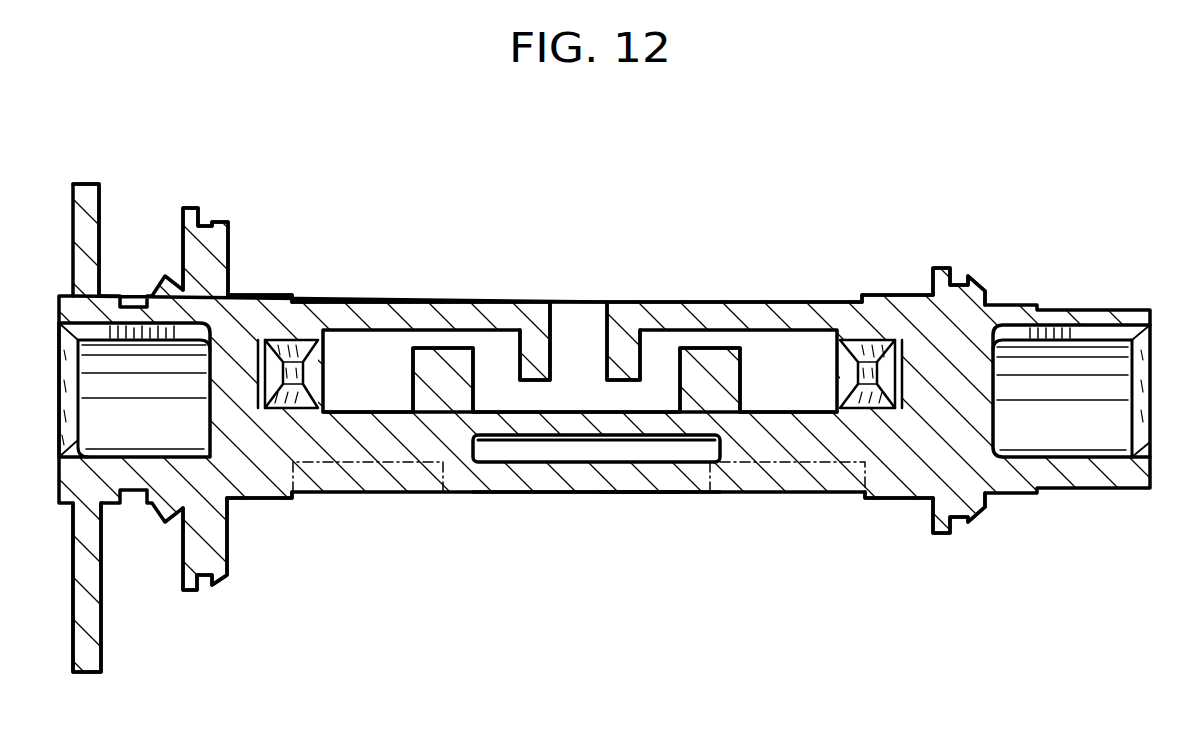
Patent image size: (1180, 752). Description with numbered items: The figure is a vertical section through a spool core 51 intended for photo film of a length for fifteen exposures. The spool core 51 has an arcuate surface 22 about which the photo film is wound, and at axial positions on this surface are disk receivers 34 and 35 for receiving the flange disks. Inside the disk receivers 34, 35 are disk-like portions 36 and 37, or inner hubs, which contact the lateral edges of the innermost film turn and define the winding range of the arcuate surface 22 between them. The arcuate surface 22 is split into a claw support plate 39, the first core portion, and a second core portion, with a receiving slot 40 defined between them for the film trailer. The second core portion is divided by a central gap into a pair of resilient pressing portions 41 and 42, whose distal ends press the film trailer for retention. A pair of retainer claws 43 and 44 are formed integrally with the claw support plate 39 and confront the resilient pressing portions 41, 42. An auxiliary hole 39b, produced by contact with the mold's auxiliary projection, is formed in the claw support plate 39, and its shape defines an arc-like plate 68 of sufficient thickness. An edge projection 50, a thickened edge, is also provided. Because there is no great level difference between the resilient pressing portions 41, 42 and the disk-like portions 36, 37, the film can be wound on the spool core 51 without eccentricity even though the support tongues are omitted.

The arcuate surface 22 is at (681, 493).
The disk receiver 34 is at (212, 222).
The disk receiver 35 is at (962, 268).
The disk-like portion 36 is at (278, 295).
The disk-like portion 37 is at (897, 295).
The claw support plate 39 is at (578, 512).
The auxiliary hole 39b is at (504, 455).
The receiving slot 40 is at (572, 412).
The resilient pressing portion 41 is at (512, 302).
The resilient pressing portion 42 is at (624, 302).
The retainer claw 43 is at (422, 378).
The retainer claw 44 is at (740, 380).
The edge projection 50 is at (413, 493).
The spool core 51 is at (82, 160).
The arc-like plate 68 is at (637, 493).